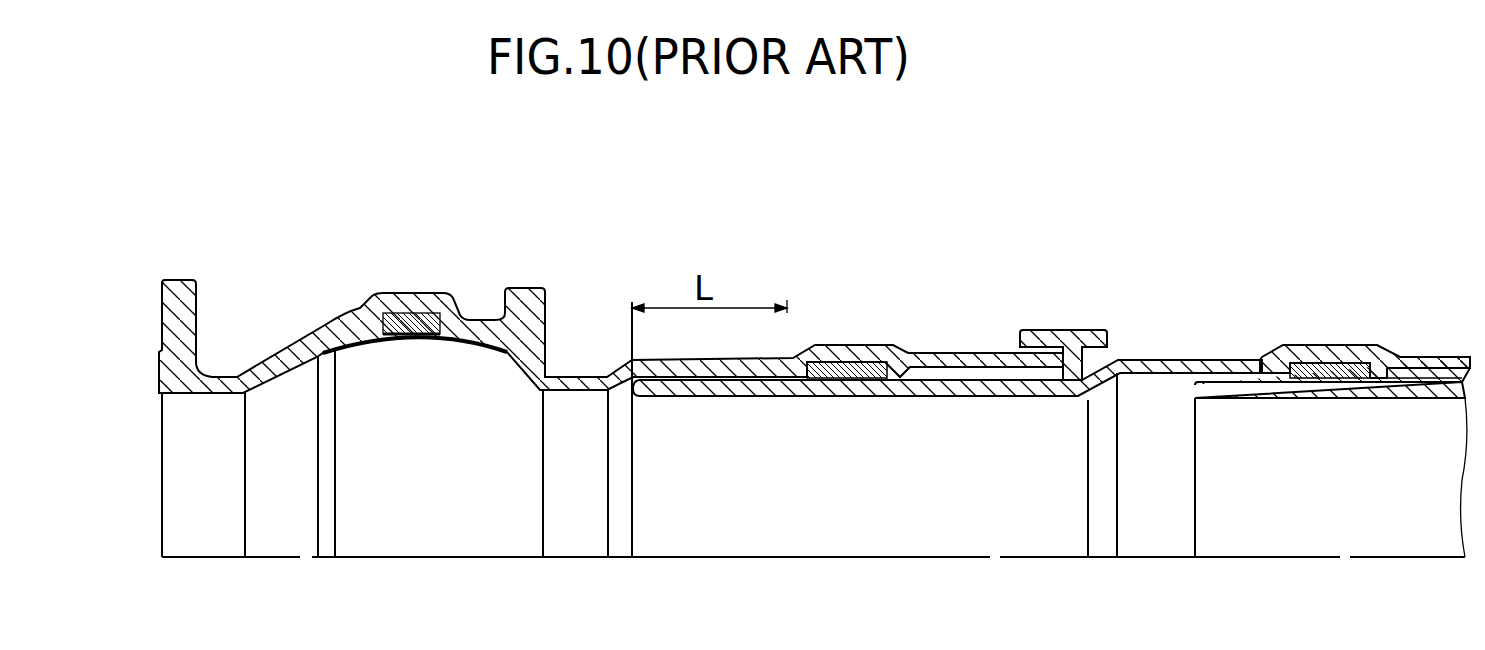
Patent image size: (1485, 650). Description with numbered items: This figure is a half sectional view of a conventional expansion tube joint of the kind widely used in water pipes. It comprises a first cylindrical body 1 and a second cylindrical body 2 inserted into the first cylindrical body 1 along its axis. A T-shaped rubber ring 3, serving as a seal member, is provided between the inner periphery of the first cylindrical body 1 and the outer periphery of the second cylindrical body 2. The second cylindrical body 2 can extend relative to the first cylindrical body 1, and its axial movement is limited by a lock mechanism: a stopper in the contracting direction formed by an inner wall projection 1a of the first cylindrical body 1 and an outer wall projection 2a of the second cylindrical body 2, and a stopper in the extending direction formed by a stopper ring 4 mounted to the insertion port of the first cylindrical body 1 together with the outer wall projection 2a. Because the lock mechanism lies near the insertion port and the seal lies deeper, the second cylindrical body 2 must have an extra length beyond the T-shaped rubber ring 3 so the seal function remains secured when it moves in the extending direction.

The first cylindrical body 1 is at (965, 345).
The inner wall projection 1a is at (893, 365).
The second cylindrical body 2 is at (1263, 352).
The outer wall projection 2a is at (912, 395).
The T-shaped rubber ring 3 is at (850, 362).
The stopper ring 4 is at (1083, 330).